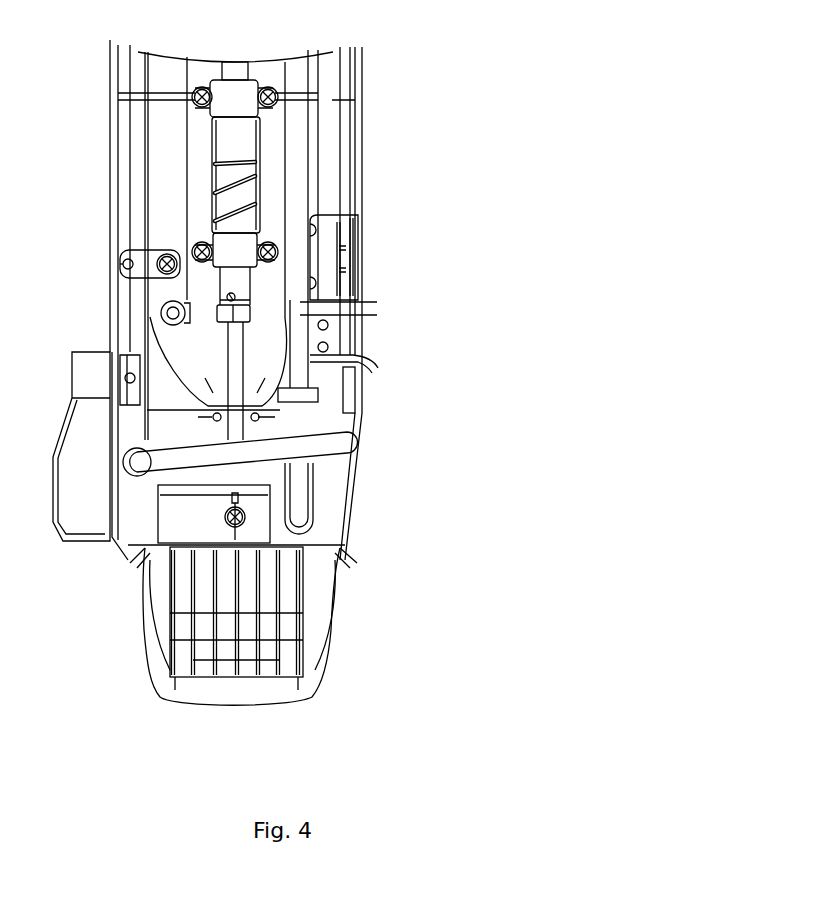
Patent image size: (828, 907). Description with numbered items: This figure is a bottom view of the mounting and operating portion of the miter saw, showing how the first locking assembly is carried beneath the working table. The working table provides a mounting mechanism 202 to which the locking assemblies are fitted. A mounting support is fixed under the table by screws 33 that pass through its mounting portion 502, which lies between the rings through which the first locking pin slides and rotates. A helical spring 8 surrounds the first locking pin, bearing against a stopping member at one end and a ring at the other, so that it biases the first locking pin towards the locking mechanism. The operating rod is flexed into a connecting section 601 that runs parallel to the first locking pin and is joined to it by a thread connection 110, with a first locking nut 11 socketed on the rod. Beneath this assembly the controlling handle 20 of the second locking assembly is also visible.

The mounting mechanism 202 is at (368, 132).
The screws 33 is at (287, 95).
The helical spring 8 is at (265, 180).
The mounting portion 502 is at (272, 213).
The thread connection 110 is at (252, 302).
The first locking nut 11 is at (252, 318).
The connecting section 601 is at (236, 360).
The controlling handle 20 is at (308, 676).